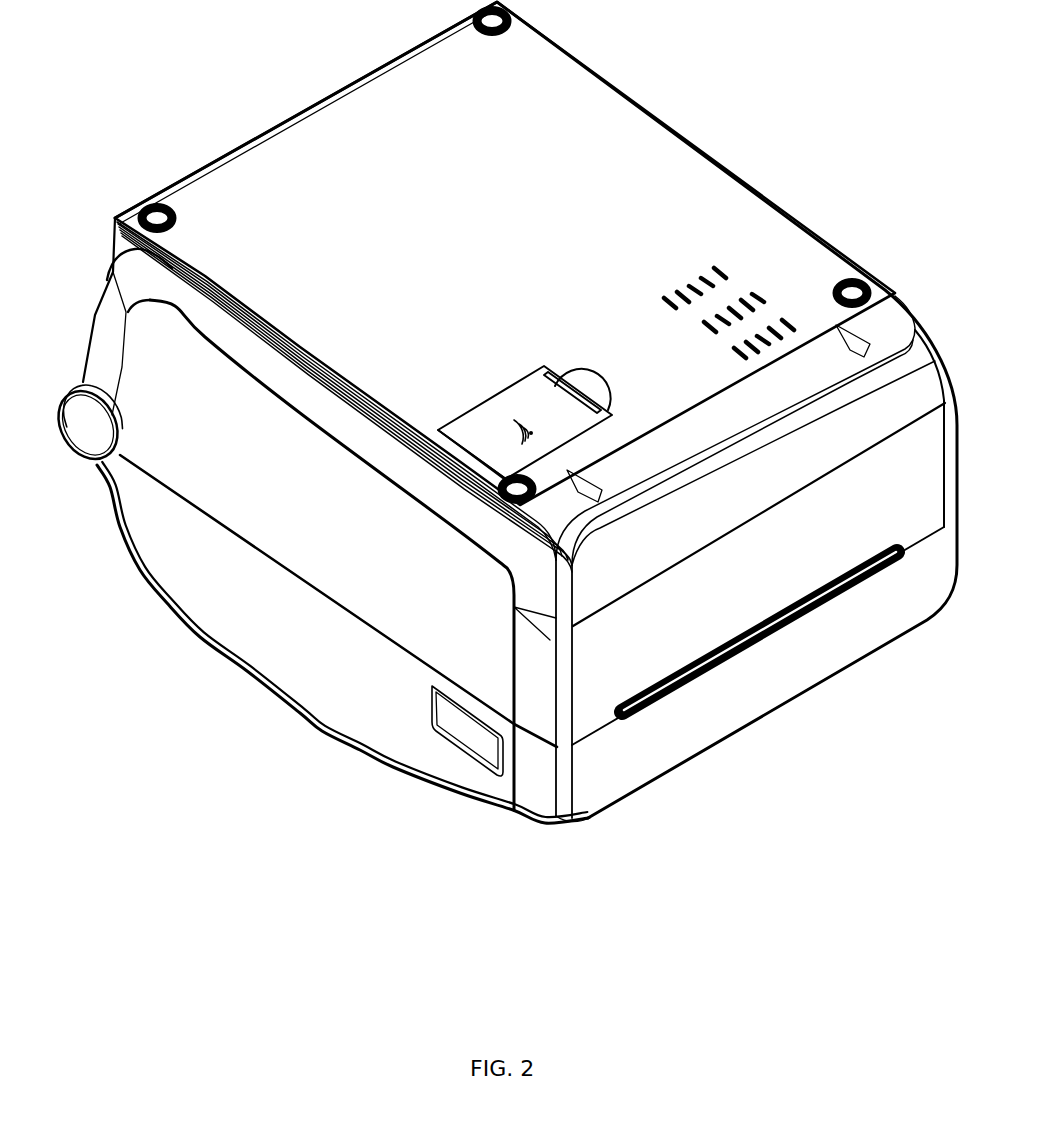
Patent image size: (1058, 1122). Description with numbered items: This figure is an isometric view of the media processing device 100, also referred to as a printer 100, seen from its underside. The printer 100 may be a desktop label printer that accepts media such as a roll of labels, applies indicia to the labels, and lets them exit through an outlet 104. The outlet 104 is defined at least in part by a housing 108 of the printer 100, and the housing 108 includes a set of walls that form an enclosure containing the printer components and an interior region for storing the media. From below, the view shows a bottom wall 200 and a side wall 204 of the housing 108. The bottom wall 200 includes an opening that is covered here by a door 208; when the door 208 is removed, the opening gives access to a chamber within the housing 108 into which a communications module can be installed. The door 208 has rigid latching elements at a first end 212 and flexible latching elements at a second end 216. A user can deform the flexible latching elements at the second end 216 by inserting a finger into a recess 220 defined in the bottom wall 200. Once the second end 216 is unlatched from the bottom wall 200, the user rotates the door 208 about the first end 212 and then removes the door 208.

The media processing device 100 is at (782, 190).
The outlet 104 is at (722, 670).
The housing 108 is at (862, 632).
The bottom wall 200 is at (640, 163).
The side wall 204 is at (190, 453).
The door 208 is at (518, 400).
The first end 212 is at (443, 450).
The second end 216 is at (571, 385).
The recess 220 is at (613, 387).